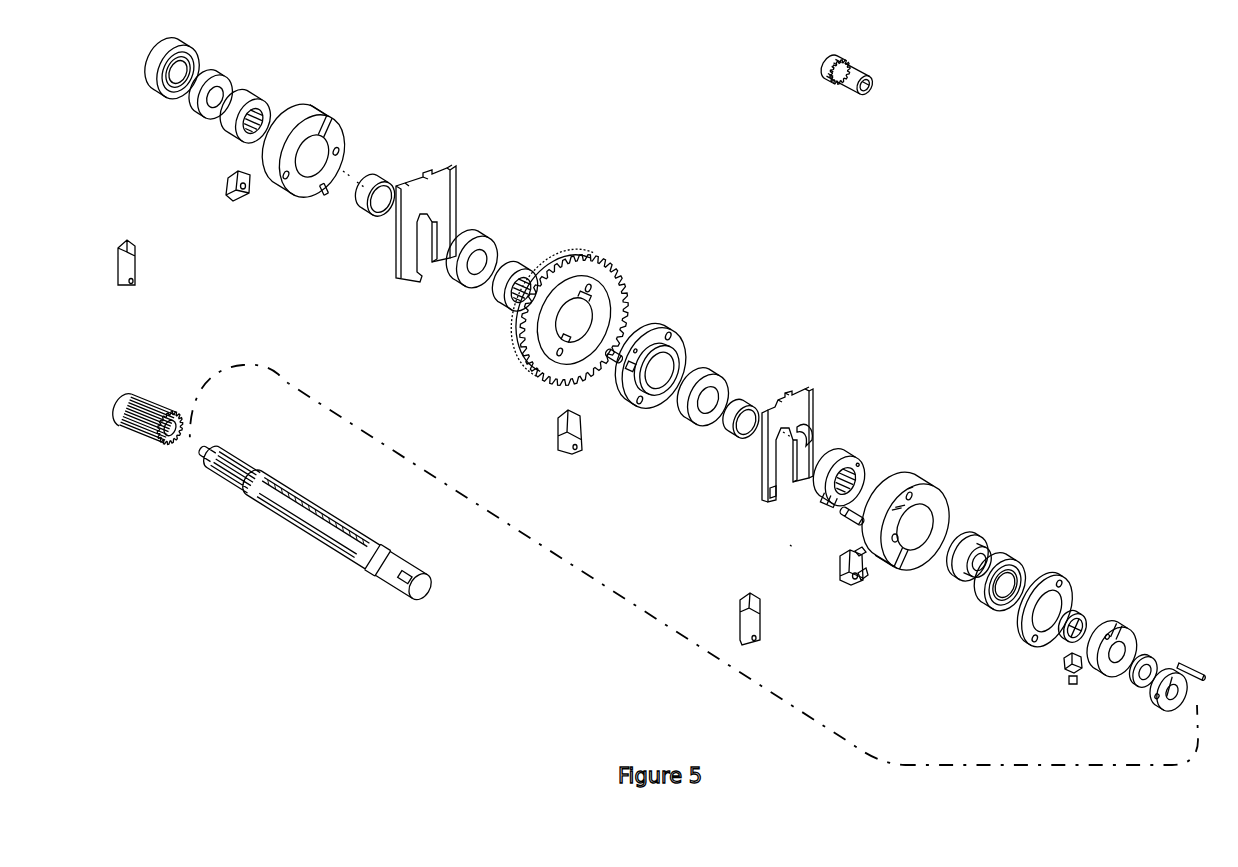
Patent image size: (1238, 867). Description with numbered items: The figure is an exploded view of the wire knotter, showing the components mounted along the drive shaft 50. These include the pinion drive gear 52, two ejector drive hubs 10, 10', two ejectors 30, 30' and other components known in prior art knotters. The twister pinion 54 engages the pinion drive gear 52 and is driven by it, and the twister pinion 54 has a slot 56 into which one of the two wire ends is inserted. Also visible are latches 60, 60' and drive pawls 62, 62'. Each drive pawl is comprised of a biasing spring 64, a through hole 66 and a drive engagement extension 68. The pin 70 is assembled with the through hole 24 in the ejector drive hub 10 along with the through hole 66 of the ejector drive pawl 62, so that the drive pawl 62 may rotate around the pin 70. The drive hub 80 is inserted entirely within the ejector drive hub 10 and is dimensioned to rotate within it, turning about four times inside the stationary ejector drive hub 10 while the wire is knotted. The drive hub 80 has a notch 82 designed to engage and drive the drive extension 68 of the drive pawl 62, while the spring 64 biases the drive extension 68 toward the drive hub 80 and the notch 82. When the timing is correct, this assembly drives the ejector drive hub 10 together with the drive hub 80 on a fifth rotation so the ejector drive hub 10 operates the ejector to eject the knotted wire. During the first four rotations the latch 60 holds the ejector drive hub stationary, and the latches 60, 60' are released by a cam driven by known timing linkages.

The ejector drive hub 10 is at (940, 504).
The ejector drive hub 10' is at (332, 124).
The through hole 24 is at (895, 540).
The ejector 30 is at (829, 404).
The ejector 30' is at (451, 202).
The drive shaft 50 is at (217, 470).
The pinion drive gear 52 is at (600, 270).
The twister pinion 54 is at (867, 68).
The slot 56 is at (870, 86).
The latch 60 is at (718, 619).
The latch 60' is at (168, 298).
The drive pawl 62 is at (838, 604).
The drive pawl 62' is at (258, 220).
The biasing spring 64 is at (862, 576).
The through hole 66 is at (855, 578).
The drive engagement extension 68 is at (858, 550).
The pin 70 is at (840, 513).
The drive hub 80 is at (853, 467).
The notch 82 is at (822, 492).